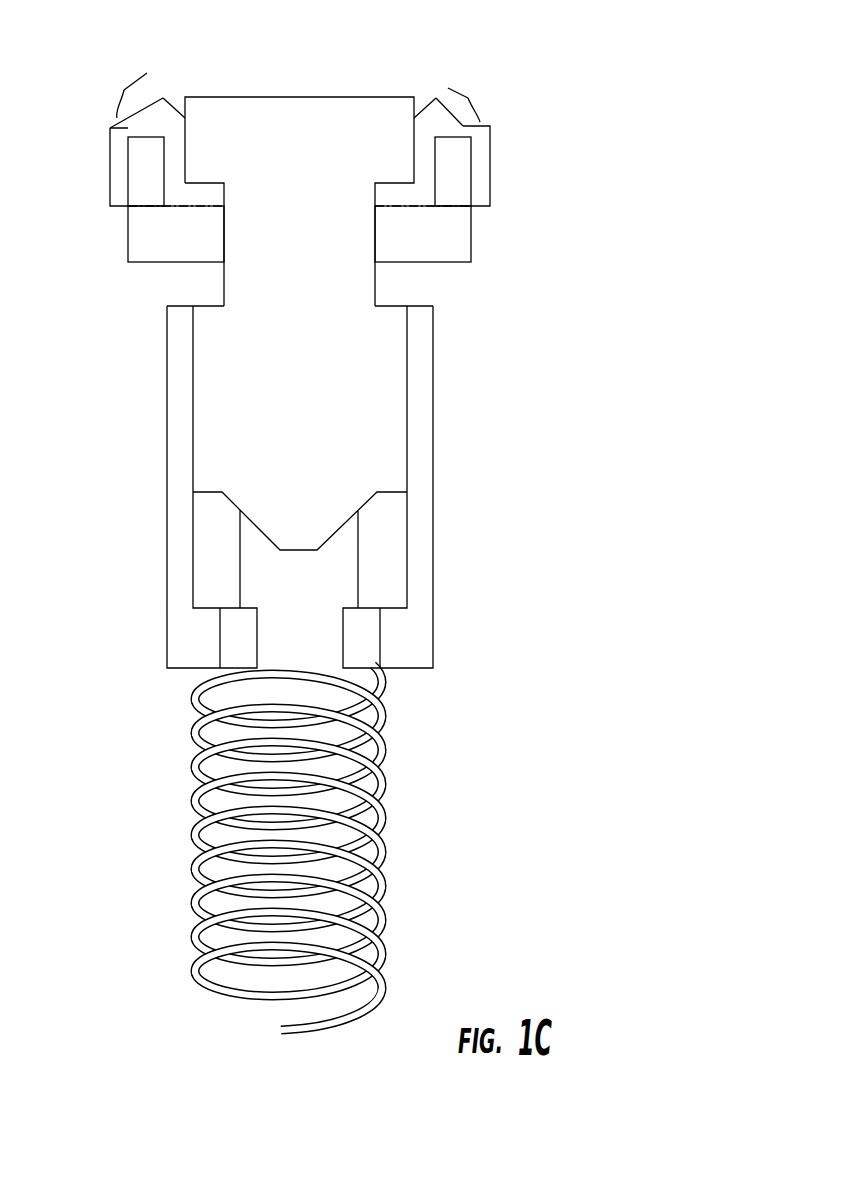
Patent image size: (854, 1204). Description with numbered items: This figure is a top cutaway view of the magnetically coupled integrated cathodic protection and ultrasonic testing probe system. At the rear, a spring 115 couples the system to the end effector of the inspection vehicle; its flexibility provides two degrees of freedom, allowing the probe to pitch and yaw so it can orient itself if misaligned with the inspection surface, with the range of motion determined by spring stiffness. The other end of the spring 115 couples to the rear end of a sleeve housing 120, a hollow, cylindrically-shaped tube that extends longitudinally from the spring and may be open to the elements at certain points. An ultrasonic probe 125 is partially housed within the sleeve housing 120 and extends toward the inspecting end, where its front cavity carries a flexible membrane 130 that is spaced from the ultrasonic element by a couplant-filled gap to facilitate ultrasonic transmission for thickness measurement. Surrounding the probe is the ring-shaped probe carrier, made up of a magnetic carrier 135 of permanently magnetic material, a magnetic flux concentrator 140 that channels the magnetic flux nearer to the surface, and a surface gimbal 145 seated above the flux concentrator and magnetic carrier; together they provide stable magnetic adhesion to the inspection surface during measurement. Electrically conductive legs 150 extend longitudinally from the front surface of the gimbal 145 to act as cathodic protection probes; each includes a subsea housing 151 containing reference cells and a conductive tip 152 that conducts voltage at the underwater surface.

The spring 115 is at (383, 841).
The sleeve housing 120 is at (176, 573).
The ultrasonic probe 125 is at (350, 402).
The flexible membrane 130 is at (285, 98).
The magnetic carrier 135 is at (462, 233).
The magnetic flux concentrator 140 is at (447, 175).
The surface gimbal 145 is at (108, 173).
The electrically conductive legs 150 is at (124, 90).
The subsea housing 151 is at (146, 122).
The conductive tip 152 is at (163, 98).